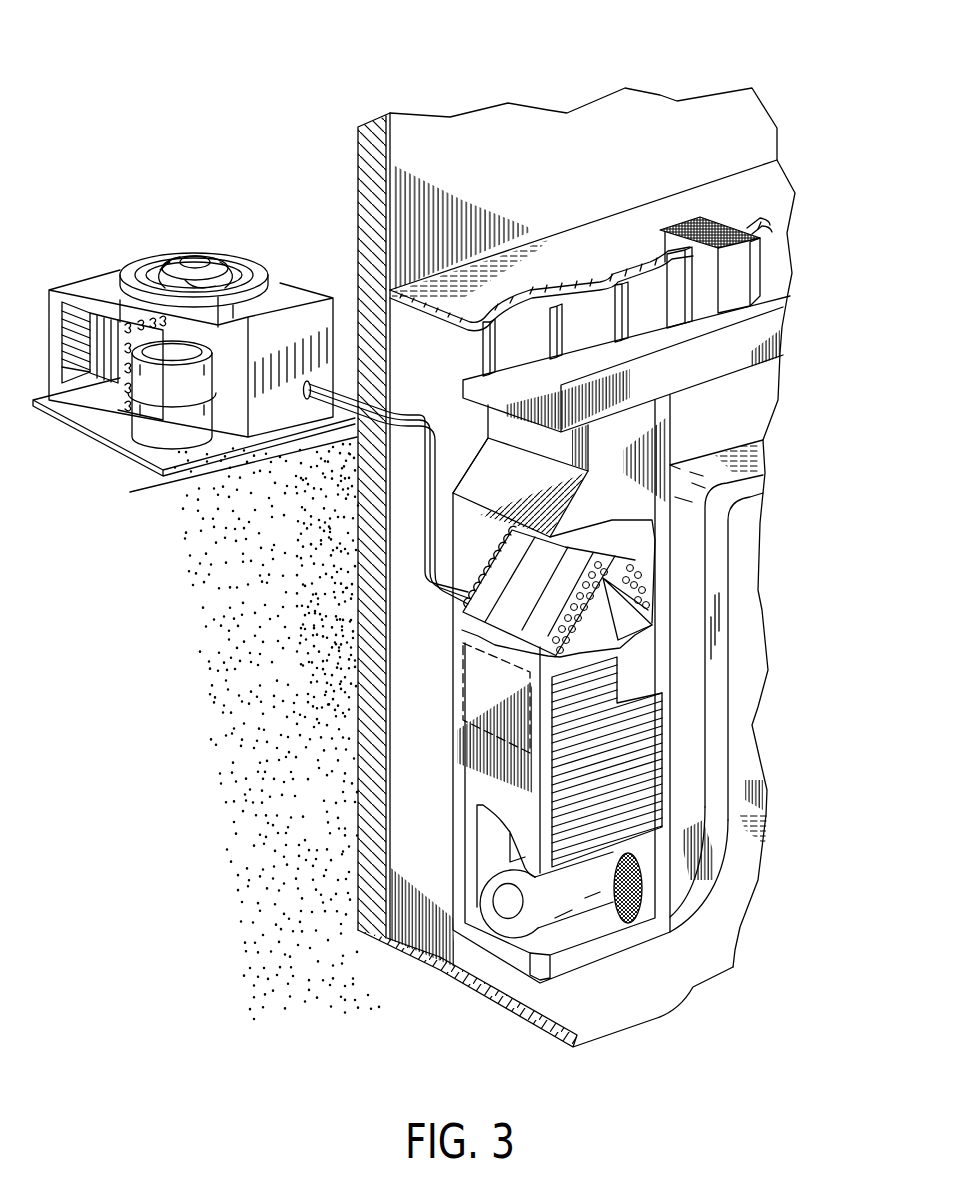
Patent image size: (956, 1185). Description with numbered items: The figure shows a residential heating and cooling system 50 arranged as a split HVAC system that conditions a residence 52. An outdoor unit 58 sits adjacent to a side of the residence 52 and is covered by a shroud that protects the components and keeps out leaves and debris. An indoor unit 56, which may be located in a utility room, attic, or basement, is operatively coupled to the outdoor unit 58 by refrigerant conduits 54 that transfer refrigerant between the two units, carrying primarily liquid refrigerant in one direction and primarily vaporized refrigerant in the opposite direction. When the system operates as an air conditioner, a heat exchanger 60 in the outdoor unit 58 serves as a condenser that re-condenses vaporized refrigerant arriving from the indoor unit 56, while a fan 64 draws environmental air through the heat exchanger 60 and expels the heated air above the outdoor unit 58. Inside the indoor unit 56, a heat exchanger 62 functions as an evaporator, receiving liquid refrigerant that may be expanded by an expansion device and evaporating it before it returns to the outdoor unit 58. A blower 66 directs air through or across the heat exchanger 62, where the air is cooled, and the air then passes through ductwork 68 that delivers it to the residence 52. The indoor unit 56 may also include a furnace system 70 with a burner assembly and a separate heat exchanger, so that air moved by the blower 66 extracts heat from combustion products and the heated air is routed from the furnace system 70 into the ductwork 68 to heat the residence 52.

The residential heating and cooling system 50 is at (186, 80).
The residence 52 is at (492, 133).
The refrigerant conduits 54 is at (421, 500).
The indoor unit 56 is at (432, 742).
The outdoor unit 58 is at (150, 246).
The heat exchanger 60 is at (124, 313).
The heat exchanger 62 is at (513, 618).
The fan 64 is at (213, 250).
The blower 66 is at (503, 922).
The ductwork 68 is at (808, 398).
The furnace system 70 is at (463, 720).